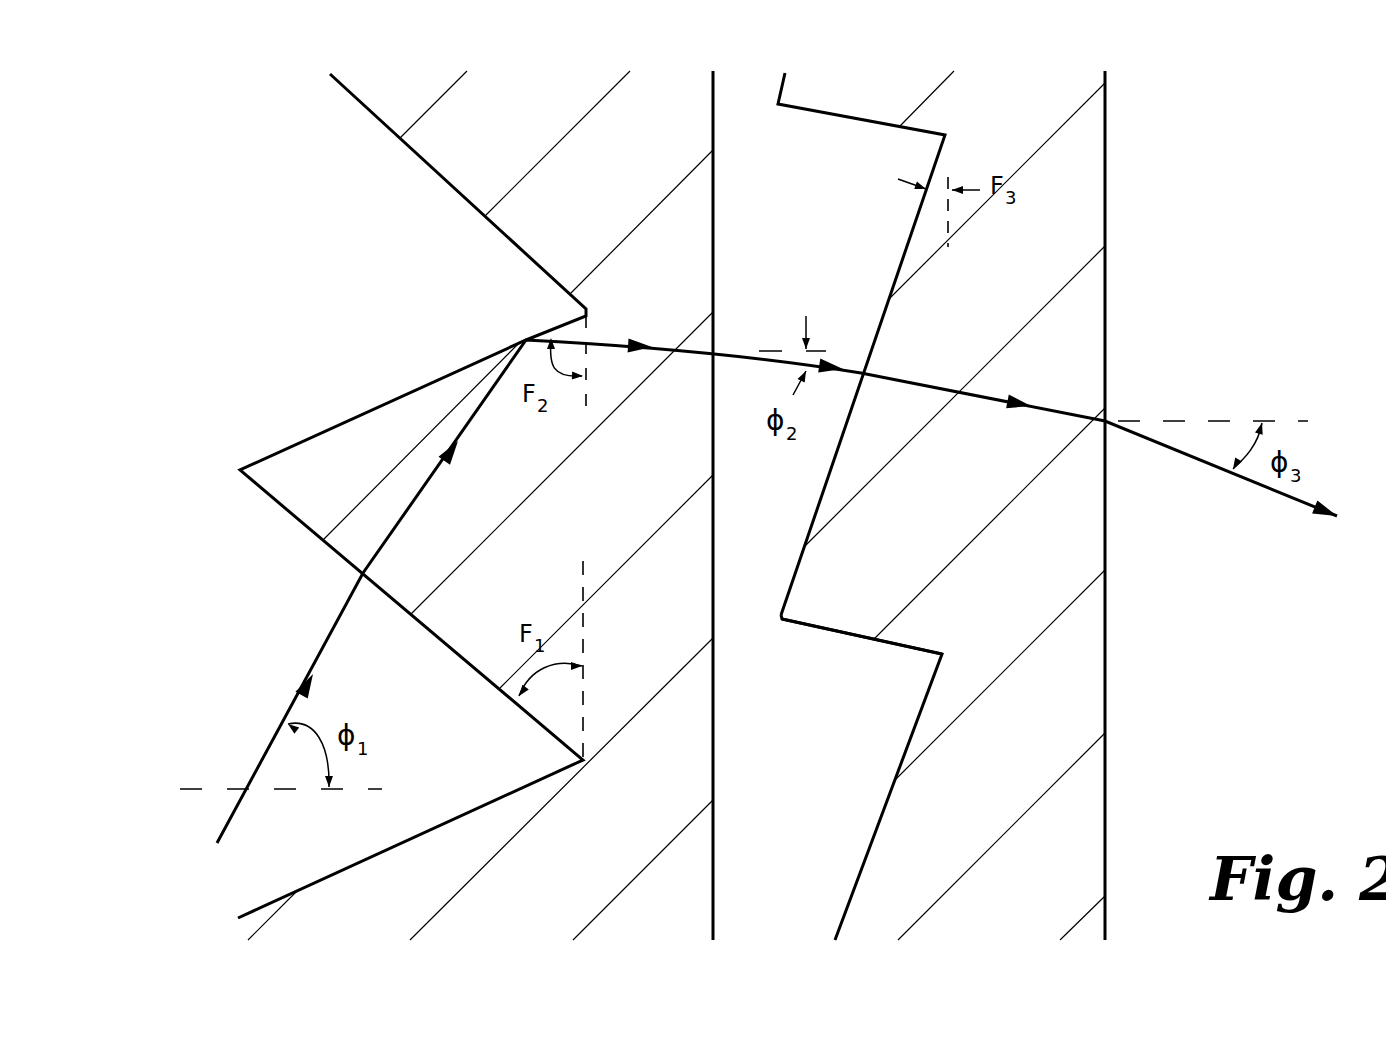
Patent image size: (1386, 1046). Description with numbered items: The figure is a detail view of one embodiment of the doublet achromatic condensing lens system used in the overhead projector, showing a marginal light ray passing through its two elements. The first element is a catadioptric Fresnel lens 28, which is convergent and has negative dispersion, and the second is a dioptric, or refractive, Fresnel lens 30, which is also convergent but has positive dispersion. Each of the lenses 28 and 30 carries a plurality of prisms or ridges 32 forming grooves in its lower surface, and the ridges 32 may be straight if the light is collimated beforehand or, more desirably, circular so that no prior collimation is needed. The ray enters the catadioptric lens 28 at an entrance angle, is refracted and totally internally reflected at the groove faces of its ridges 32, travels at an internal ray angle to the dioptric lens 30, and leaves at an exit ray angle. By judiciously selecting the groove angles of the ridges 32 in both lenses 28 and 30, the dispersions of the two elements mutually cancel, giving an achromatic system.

The catadioptric Fresnel lens 28 is at (462, 164).
The dioptric Fresnel lens 30 is at (1077, 214).
The prisms or ridges 32 is at (781, 616).